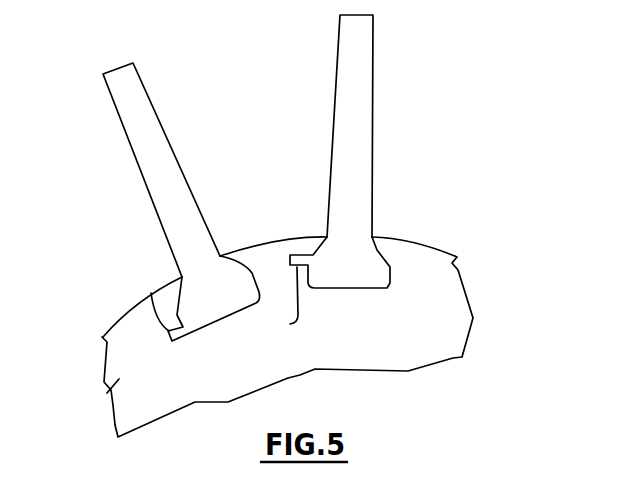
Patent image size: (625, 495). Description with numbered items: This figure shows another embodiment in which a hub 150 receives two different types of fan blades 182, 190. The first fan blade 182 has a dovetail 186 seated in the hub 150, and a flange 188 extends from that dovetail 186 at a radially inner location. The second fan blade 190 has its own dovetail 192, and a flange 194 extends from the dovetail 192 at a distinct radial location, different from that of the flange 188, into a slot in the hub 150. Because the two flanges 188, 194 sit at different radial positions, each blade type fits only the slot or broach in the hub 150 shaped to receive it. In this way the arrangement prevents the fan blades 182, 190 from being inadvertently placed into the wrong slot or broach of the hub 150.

The hub 150 is at (112, 392).
The fan blade 182 is at (158, 150).
The dovetail 186 is at (201, 318).
The flange 188 is at (152, 293).
The fan blade 190 is at (358, 163).
The dovetail 192 is at (375, 275).
The flange 194 is at (290, 324).